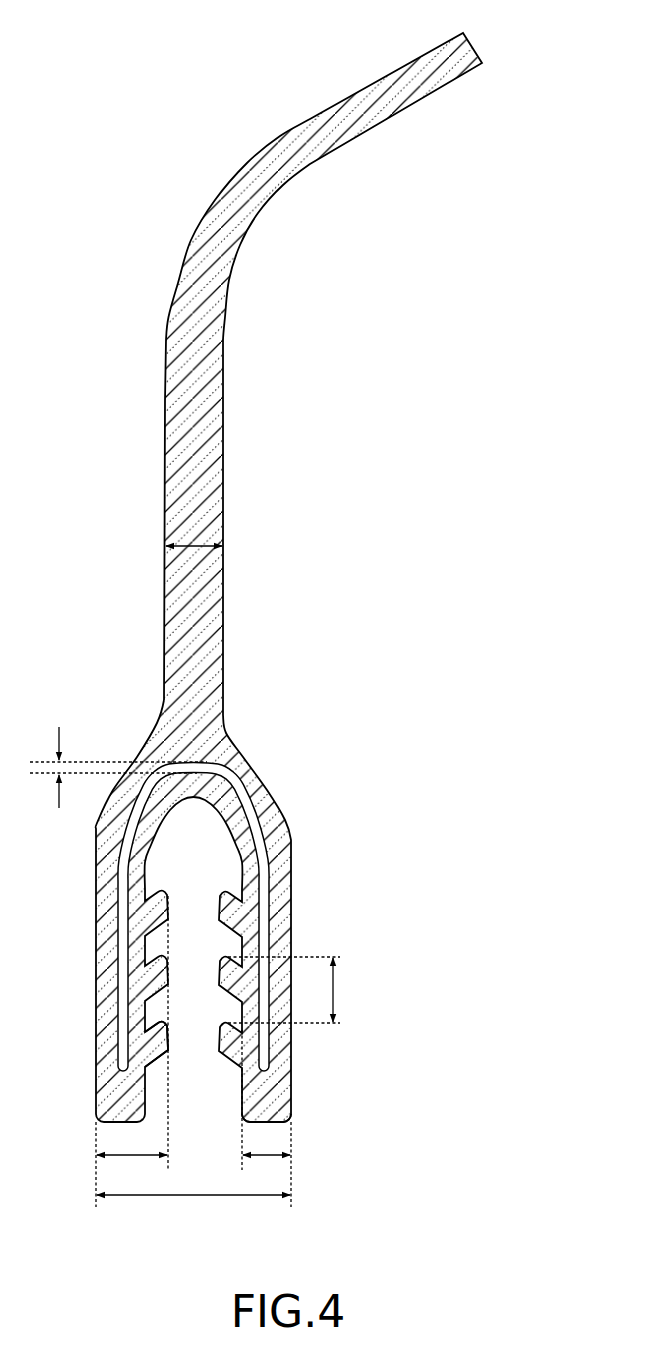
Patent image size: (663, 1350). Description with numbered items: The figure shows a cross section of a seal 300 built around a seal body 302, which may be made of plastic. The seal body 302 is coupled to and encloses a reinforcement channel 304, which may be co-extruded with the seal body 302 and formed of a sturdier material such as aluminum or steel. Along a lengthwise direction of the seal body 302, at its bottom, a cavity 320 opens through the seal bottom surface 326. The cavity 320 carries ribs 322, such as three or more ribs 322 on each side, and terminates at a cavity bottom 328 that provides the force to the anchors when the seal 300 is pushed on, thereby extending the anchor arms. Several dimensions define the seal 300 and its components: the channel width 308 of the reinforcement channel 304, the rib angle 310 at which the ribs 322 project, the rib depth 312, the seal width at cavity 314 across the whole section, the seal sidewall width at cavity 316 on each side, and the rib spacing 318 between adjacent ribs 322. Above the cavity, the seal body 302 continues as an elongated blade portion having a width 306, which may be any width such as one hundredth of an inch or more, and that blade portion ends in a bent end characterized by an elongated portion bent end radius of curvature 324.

The seal 300 is at (175, 40).
The seal body 302 is at (165, 412).
The reinforcement channel 304 is at (125, 870).
The width of elongated (blade) portion 306 is at (194, 550).
The channel width 308 is at (118, 755).
The rib angle 310 is at (196, 971).
The rib depth 312 is at (132, 1051).
The seal width at cavity 314 is at (193, 1209).
The seal sidewall width at cavity 316 is at (266, 1118).
The rib spacing 318 is at (305, 990).
The cavity 320 is at (200, 1110).
The ribs 322 is at (164, 1028).
The elongated portion bent end radius of curvature 324 is at (304, 170).
The seal bottom surface 326 is at (262, 1123).
The cavity bottom 328 is at (196, 810).